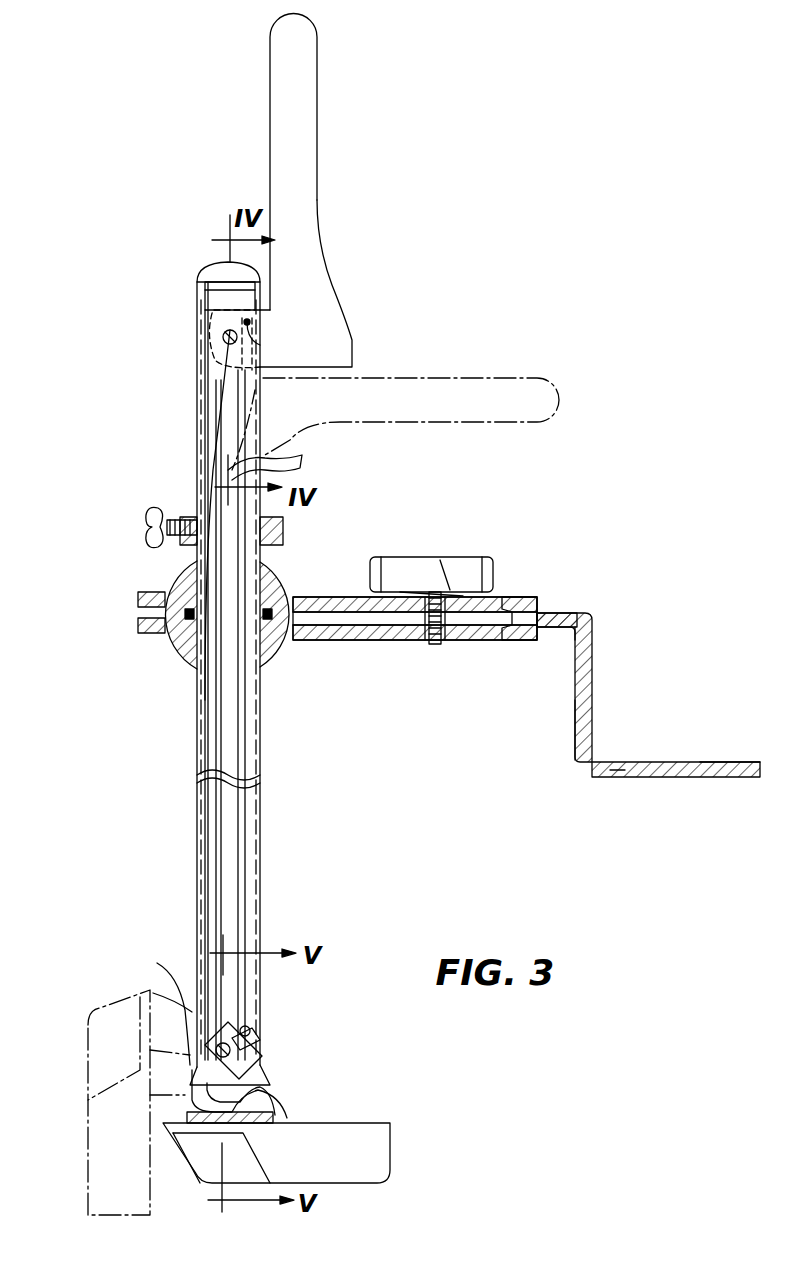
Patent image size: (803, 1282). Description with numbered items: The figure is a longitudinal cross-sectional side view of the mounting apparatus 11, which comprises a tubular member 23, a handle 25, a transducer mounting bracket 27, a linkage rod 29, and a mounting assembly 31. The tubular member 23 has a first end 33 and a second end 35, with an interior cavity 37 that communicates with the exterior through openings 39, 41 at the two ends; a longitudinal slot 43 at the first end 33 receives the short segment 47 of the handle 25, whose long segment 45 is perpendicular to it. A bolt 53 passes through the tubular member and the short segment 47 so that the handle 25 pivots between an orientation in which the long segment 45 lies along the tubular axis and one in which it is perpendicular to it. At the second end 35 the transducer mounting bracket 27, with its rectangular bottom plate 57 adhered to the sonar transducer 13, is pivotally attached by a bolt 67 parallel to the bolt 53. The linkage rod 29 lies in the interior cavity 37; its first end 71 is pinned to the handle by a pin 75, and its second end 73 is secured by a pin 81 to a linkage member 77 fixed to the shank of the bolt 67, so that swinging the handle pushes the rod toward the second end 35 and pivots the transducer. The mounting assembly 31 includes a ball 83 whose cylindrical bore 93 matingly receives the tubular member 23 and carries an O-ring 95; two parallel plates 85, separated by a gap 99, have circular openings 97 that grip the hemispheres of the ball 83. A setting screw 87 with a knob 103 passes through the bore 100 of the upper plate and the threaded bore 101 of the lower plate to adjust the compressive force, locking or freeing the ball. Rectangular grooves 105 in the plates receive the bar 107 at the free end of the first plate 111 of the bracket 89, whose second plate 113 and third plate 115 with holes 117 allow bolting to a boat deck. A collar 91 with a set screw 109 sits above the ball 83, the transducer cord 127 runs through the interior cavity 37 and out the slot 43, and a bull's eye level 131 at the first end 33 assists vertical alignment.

The mounting apparatus 11 is at (160, 426).
The sonar transducer 13 is at (392, 1160).
The tubular member 23 is at (197, 732).
The handle 25 is at (317, 78).
The transducer mounting bracket 27 is at (277, 1105).
The linkage rod 29 is at (246, 795).
The mounting assembly 31 is at (510, 598).
The first end 33 is at (203, 290).
The second end 35 is at (200, 1000).
The interior cavity 37 is at (207, 835).
The opening 39 is at (215, 268).
The opening 41 is at (192, 1045).
The longitudinal slot 43 is at (300, 470).
The long segment 45 is at (316, 206).
The short segment 47 is at (213, 348).
The bolt 53 is at (222, 335).
The bottom plate 57 is at (190, 1124).
The bolt 67 is at (258, 1072).
The first end 71 is at (252, 345).
The second end 73 is at (248, 1030).
The pin 75 is at (252, 325).
The linkage member 77 is at (250, 1050).
The pin 81 is at (251, 1037).
The ball 83 is at (172, 580).
The plates 85 is at (328, 598).
The setting screw 87 is at (441, 622).
The bracket 89 is at (593, 690).
The collar 91 is at (284, 532).
The cylindrical bore 93 is at (213, 700).
The O-ring 95 is at (150, 626).
The circular opening 97 is at (290, 602).
The gap 99 is at (360, 626).
The bore 100 is at (441, 560).
The threaded bore 101 is at (428, 626).
The knob 103 is at (480, 572).
The rectangular grooves 105 is at (512, 641).
The bar 107 is at (545, 613).
The set screw 109 is at (150, 508).
The first plate 111 is at (578, 615).
The second plate 113 is at (586, 735).
The third plate 115 is at (692, 779).
The holes 117 is at (616, 779).
The cord 127 is at (195, 762).
The bull's eye level 131 is at (213, 265).